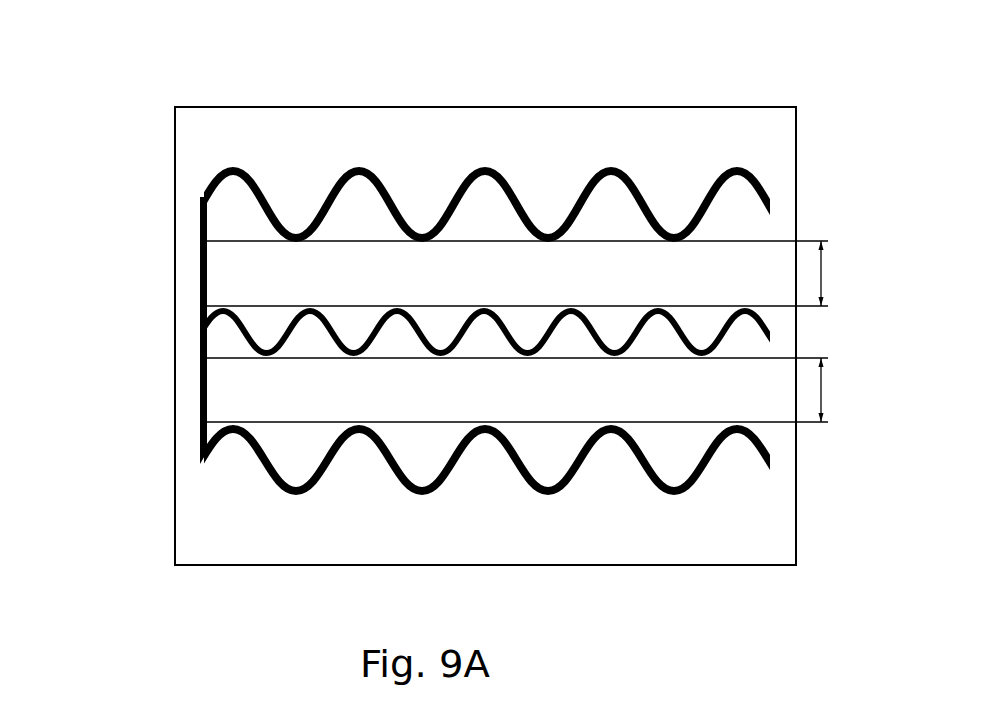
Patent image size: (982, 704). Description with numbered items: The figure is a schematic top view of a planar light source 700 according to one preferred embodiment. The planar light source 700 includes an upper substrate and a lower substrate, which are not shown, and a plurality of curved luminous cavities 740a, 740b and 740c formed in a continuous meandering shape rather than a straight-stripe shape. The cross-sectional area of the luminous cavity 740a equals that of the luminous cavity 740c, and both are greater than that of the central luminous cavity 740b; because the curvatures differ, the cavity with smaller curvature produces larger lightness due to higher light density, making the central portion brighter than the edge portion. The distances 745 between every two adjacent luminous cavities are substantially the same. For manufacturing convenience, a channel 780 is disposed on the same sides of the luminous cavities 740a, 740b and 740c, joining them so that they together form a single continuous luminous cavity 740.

The planar light source 700 is at (152, 60).
The continuous luminous cavity 740 is at (80, 170).
The luminous cavity 740a is at (203, 193).
The luminous cavity 740b is at (203, 322).
The luminous cavity 740c is at (203, 449).
The distance 745 is at (843, 331).
The channel 780 is at (203, 262).